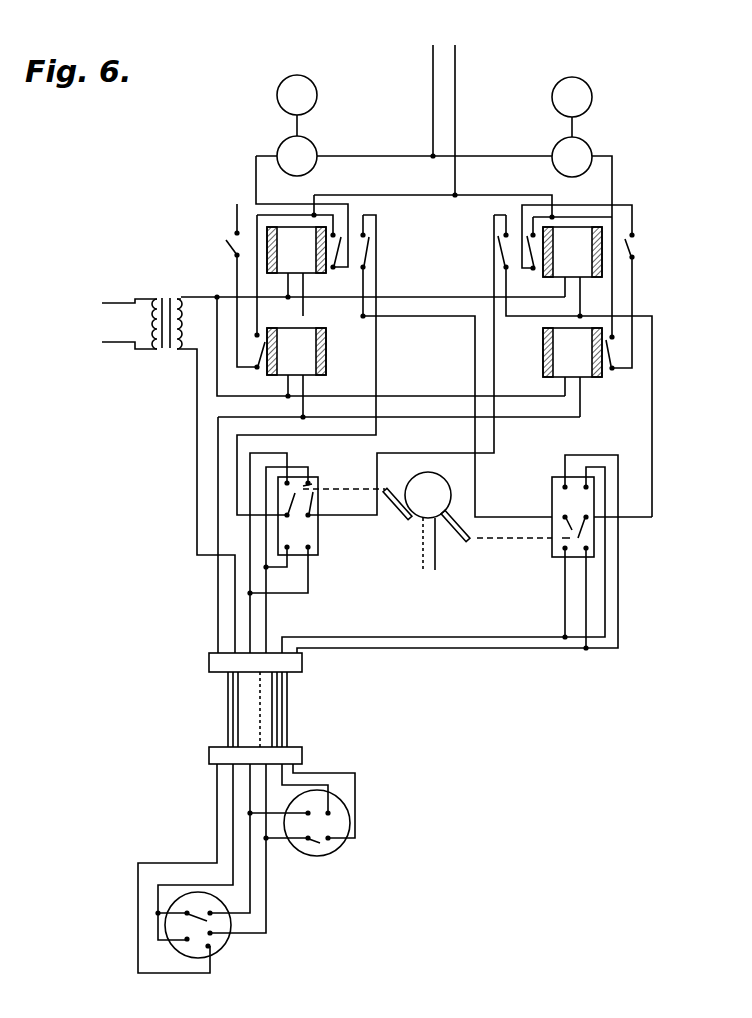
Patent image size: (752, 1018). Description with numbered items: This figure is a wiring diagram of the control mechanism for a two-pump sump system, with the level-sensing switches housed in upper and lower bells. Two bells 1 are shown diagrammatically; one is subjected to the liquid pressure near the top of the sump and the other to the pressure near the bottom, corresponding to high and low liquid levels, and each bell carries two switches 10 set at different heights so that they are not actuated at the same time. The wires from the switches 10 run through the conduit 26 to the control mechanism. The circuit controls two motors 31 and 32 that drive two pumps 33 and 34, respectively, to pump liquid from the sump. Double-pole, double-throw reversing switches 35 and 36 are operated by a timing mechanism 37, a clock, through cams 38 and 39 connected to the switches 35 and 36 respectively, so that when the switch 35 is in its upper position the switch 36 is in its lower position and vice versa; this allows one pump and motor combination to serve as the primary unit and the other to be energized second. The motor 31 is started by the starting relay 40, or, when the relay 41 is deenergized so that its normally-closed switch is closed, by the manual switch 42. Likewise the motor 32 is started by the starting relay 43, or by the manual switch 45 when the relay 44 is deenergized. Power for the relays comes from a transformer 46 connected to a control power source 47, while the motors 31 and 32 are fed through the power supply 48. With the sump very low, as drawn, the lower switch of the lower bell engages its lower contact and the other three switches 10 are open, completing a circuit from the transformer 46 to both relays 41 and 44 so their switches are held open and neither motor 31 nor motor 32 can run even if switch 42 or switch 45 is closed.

The bell 1 is at (218, 947).
The switch 10 is at (200, 942).
The conduit 26 is at (247, 701).
The motor 31 is at (313, 148).
The motor 32 is at (587, 151).
The pump 33 is at (311, 91).
The pump 34 is at (587, 92).
The reversing switch 35 is at (305, 529).
The reversing switch 36 is at (553, 538).
The timing mechanism 37 is at (445, 485).
The cam 38 is at (405, 520).
The cam 39 is at (457, 535).
The starting relay 40 is at (305, 259).
The relay 41 is at (305, 360).
The manual switch 42 is at (230, 247).
The starting relay 43 is at (581, 261).
The relay 44 is at (581, 362).
The manual switch 45 is at (642, 251).
The transformer 46 is at (165, 352).
The control power source 47 is at (102, 303).
The power supply 48 is at (433, 97).